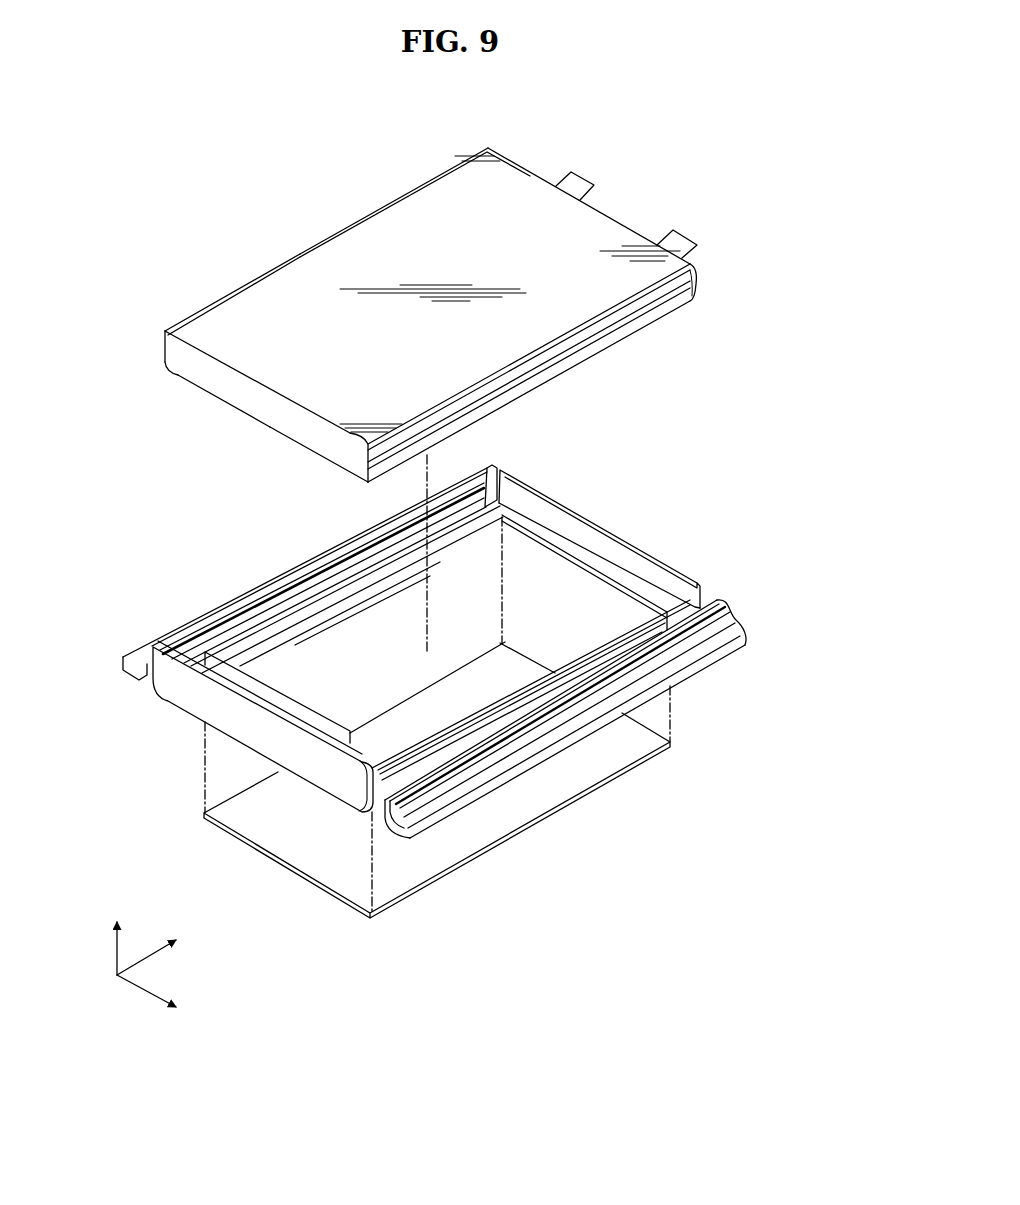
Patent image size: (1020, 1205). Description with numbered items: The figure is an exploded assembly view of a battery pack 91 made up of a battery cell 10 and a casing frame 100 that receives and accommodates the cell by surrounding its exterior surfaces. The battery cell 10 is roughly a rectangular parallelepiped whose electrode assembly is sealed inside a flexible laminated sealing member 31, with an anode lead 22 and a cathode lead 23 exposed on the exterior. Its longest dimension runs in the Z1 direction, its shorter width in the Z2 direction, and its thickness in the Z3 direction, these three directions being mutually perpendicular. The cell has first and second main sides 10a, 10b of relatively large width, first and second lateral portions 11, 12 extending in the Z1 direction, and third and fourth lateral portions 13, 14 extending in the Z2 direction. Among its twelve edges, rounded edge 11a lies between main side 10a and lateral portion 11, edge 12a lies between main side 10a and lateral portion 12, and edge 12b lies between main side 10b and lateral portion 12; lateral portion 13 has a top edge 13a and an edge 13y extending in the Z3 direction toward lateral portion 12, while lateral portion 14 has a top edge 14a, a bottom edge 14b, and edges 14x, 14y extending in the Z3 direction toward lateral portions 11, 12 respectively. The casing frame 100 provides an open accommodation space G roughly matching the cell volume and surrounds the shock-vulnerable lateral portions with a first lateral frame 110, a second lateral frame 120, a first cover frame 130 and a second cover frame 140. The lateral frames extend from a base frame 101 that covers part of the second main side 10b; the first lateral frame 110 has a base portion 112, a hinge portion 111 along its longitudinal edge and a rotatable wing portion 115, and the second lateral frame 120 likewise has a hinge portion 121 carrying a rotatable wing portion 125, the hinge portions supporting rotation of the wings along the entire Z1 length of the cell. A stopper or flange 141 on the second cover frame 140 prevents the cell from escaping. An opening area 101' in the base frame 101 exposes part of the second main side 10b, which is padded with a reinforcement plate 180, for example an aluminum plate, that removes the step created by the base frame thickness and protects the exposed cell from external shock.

The battery pack 91 is at (233, 201).
The battery cell 10 is at (186, 413).
The first main side 10a is at (330, 262).
The second main side 10b is at (191, 383).
The first lateral portion 11 is at (398, 197).
The rounded edge 11a is at (216, 298).
The second lateral portion 12 is at (674, 300).
The rounded edge 12a is at (622, 298).
The edge 12b is at (650, 328).
The third lateral portion 13 is at (708, 270).
The top edge 13a is at (592, 206).
The edge 13y is at (697, 286).
The fourth lateral portion 14 is at (256, 415).
The top edge 14a is at (305, 399).
The bottom edge 14b is at (232, 408).
The edge 14x is at (161, 338).
The edge 14y is at (360, 468).
The anode lead 22 is at (567, 178).
The cathode lead 23 is at (676, 236).
The sealing member 31 is at (305, 277).
The casing frame 100 is at (188, 736).
The base frame 101 is at (599, 528).
The opening area 101' is at (584, 539).
The first lateral frame 110 is at (306, 546).
The hinge portion 111 is at (490, 468).
The base portion 112 is at (437, 540).
The wing portion 115 is at (331, 546).
The second lateral frame 120 is at (576, 746).
The hinge portion 121 is at (720, 600).
The wing portion 125 is at (668, 672).
The first cover frame 130 is at (633, 529).
The second cover frame 140 is at (245, 738).
The stopper 141 is at (300, 700).
The reinforcement plate 180 is at (500, 845).
The accommodation space G is at (380, 620).
The longitudinal direction Z1 is at (159, 951).
The width direction Z2 is at (159, 999).
The thickness direction Z3 is at (117, 929).